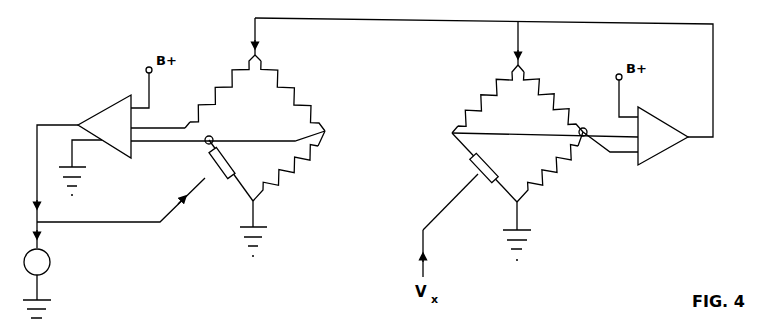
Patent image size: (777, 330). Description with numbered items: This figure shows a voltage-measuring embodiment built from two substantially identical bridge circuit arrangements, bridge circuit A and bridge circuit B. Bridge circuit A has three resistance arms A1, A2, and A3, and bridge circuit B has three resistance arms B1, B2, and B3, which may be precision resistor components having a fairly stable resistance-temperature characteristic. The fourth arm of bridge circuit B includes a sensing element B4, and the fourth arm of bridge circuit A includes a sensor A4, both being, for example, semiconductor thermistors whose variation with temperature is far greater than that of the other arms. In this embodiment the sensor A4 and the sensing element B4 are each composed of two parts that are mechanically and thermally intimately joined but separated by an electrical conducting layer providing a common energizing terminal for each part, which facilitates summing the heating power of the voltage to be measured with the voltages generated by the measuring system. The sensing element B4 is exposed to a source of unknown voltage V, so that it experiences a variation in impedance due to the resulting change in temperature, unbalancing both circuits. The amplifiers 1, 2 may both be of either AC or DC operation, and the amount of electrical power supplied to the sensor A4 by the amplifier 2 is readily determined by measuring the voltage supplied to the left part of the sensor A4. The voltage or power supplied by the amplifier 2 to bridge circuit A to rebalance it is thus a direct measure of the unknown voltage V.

The amplifier 1 is at (663, 136).
The amplifier 2 is at (104, 126).
The bridge circuit A is at (255, 109).
The resistance arm A1 is at (289, 166).
The resistance arm A2 is at (291, 93).
The resistance arm A3 is at (219, 91).
The sensor A4 is at (231, 170).
The bridge circuit B is at (518, 135).
The resistance arm B1 is at (550, 167).
The resistance arm B2 is at (551, 98).
The resistance arm B3 is at (485, 99).
The sensing element B4 is at (484, 169).
The source of unknown voltage V is at (37, 262).